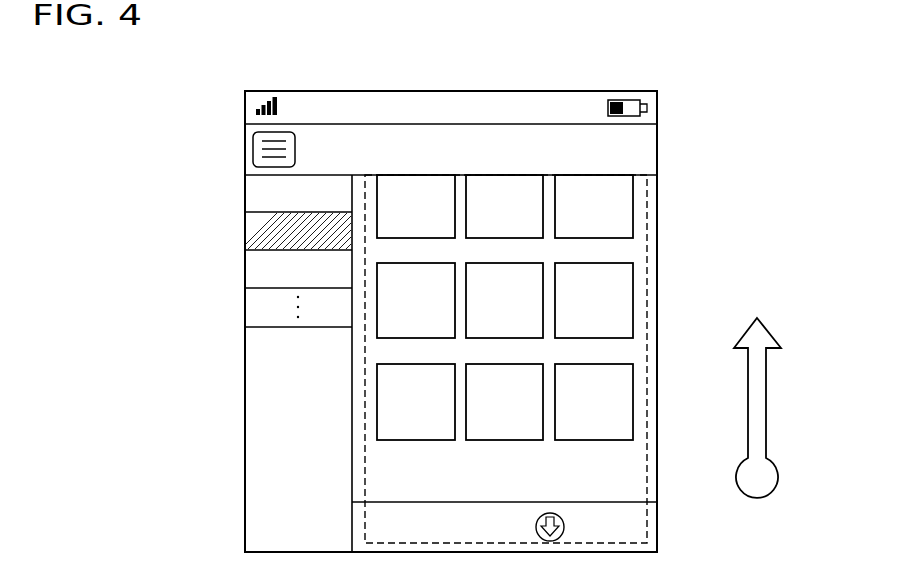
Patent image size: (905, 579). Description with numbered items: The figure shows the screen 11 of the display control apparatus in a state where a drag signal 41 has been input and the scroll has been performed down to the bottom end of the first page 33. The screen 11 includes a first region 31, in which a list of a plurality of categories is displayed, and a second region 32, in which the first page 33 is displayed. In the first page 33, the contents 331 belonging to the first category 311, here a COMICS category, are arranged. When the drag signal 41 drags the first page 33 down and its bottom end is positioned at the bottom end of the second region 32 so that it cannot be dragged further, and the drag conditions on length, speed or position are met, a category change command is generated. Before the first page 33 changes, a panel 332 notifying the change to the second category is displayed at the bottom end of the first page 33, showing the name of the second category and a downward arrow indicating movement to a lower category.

The screen 11 is at (453, 90).
The first region 31 is at (322, 175).
The second region 32 is at (387, 175).
The first category 311 is at (248, 229).
The first page 33 is at (546, 359).
The contents 331 is at (633, 206).
The panel 332 is at (630, 528).
The drag signal 41 is at (768, 404).